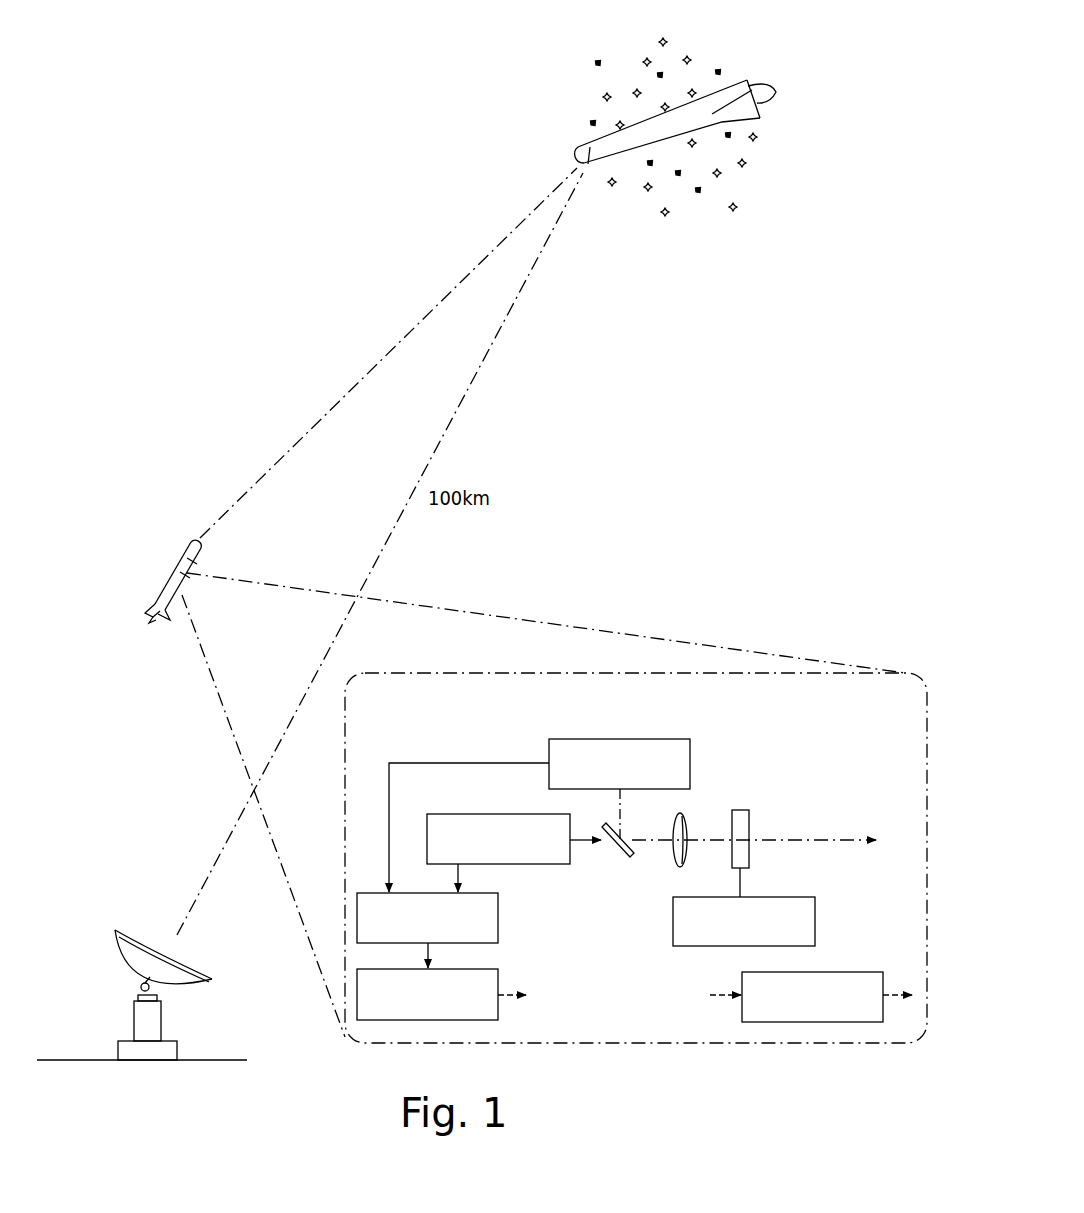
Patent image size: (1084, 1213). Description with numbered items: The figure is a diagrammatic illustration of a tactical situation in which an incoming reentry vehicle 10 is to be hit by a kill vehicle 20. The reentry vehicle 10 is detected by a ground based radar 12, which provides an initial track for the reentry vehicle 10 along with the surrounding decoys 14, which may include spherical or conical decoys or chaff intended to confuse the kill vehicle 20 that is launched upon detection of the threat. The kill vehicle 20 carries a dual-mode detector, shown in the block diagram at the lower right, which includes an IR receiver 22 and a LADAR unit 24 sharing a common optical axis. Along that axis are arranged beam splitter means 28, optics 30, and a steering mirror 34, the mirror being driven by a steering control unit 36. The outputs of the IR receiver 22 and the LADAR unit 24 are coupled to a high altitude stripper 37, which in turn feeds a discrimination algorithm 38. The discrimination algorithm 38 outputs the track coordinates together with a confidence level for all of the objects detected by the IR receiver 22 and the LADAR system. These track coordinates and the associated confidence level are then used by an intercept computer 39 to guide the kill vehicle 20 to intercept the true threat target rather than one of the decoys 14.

The reentry vehicle 10 is at (748, 80).
The ground based radar 12 is at (115, 930).
The decoys 14 is at (695, 54).
The kill vehicle 20 is at (188, 551).
The IR receiver 22 is at (618, 739).
The LADAR unit 24 is at (468, 815).
The beam splitter means 28 is at (625, 851).
The optics 30 is at (684, 815).
The steering mirror 34 is at (750, 815).
The steering control unit 36 is at (790, 898).
The high altitude stripper 37 is at (498, 905).
The discrimination algorithm 38 is at (498, 972).
The intercept computer 39 is at (828, 973).